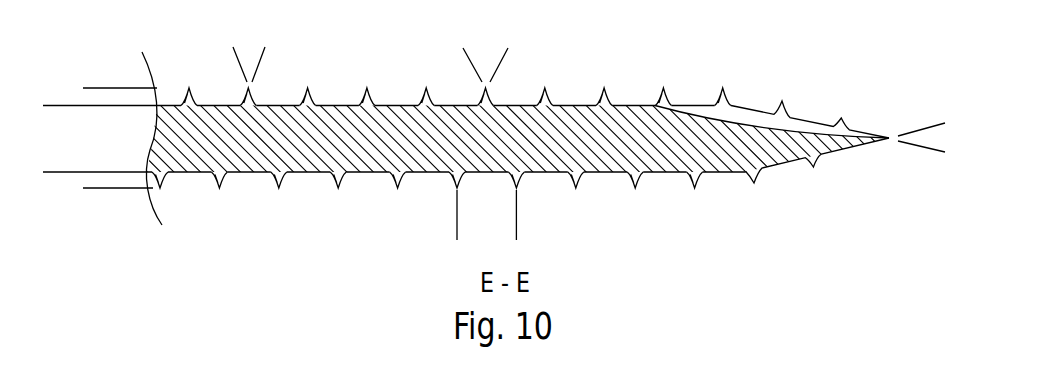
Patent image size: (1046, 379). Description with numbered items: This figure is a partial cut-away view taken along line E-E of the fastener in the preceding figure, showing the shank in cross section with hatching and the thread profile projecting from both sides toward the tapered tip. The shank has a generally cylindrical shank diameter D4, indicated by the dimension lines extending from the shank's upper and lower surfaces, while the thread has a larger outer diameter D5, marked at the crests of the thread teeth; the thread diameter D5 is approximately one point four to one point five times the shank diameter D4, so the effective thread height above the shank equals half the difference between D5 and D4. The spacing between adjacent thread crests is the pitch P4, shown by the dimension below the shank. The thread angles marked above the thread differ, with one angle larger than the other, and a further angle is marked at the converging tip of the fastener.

The shank diameter D4 is at (66, 179).
The thread diameter D5 is at (119, 195).
The pitch P4 is at (522, 228).